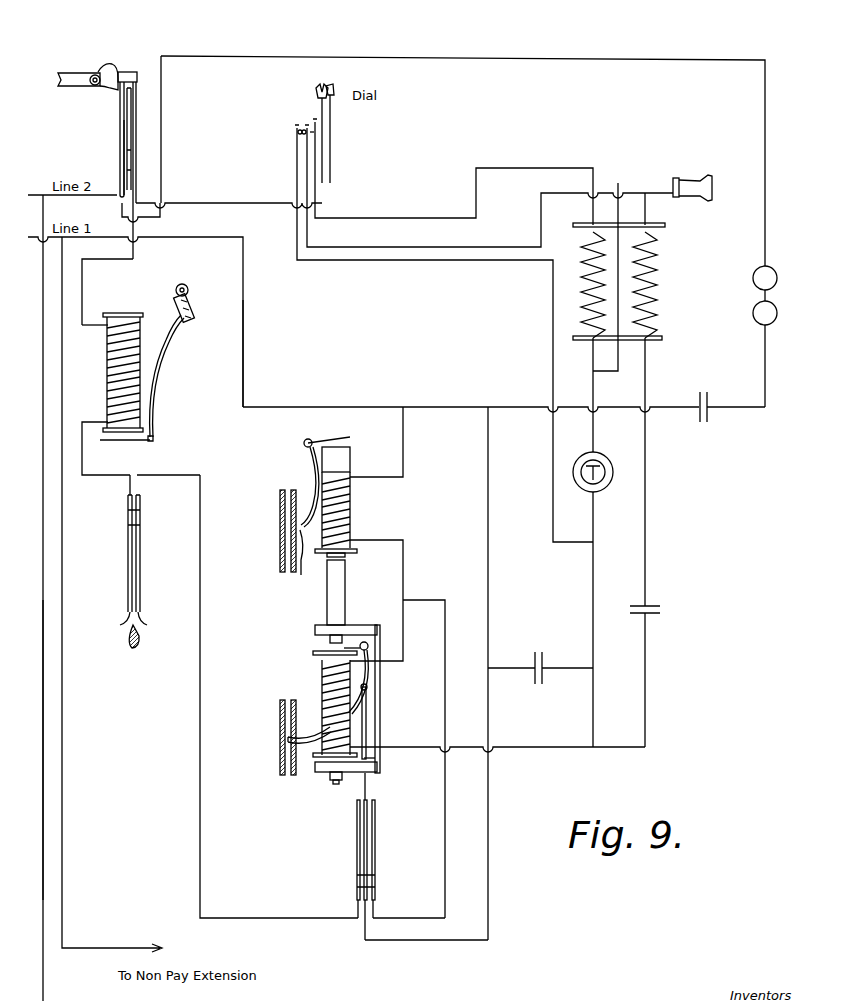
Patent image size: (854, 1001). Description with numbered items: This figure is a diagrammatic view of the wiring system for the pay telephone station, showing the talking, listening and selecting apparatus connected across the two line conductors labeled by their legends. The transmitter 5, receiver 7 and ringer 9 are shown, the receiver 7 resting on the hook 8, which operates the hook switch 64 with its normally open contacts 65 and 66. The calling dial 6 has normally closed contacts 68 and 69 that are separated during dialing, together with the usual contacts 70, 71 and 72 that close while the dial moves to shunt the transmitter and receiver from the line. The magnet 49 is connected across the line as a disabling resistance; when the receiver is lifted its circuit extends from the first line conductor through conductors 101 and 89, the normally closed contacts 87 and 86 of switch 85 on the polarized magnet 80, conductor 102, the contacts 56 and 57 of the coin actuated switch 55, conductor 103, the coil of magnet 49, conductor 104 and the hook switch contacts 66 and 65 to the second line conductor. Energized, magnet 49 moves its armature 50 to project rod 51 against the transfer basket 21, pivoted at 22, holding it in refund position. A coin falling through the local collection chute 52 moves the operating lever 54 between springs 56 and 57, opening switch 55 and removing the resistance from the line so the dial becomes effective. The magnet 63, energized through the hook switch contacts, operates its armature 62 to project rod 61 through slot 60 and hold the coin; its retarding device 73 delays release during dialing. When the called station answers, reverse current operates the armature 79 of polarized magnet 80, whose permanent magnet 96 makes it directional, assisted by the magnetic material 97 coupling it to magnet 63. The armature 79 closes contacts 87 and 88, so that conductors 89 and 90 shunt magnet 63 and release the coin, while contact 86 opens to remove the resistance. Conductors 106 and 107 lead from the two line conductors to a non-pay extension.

The hook 8 is at (70, 73).
The hook switch 64 is at (128, 72).
The hook switch contact 65 is at (133, 90).
The hook switch contact 66 is at (138, 126).
The dial contact 68 is at (320, 110).
The dial contact 69 is at (333, 115).
The dial contact 70 is at (293, 128).
The dial contact 71 is at (307, 143).
The dial contact 72 is at (315, 153).
The calling dial 6 is at (339, 158).
The receiver 7 is at (690, 184).
The ringer 9 is at (746, 270).
The transmitter 5 is at (603, 472).
The conductor 104 is at (82, 280).
The pivot 22 is at (188, 288).
The transfer basket 21 is at (193, 310).
The magnet 49 is at (110, 377).
The rod 51 is at (158, 353).
The armature 50 is at (153, 440).
The conductor 101 is at (243, 352).
The conductor 103 is at (82, 465).
The coin actuated switch 55 is at (146, 545).
The contact spring 57 is at (127, 618).
The contact spring 56 is at (140, 618).
The operating lever 54 is at (141, 637).
The armature 62 is at (338, 441).
The rod 61 is at (306, 463).
The retarding device 73 is at (352, 458).
The local collection chute 52 is at (285, 505).
The magnet 63 is at (352, 505).
The slot 60 is at (301, 564).
The magnetic material 97 is at (342, 584).
The conductor 89 is at (488, 530).
The armature 79 is at (325, 645).
The polarized magnet 80 is at (325, 670).
The permanent magnet 96 is at (375, 697).
The conductor 90 is at (445, 650).
The contact 87 is at (367, 788).
The switch 85 is at (382, 816).
The contact 86 is at (357, 828).
The contact 88 is at (375, 845).
The conductor 106 is at (62, 716).
The conductor 107 is at (43, 766).
The conductor 102 is at (200, 828).